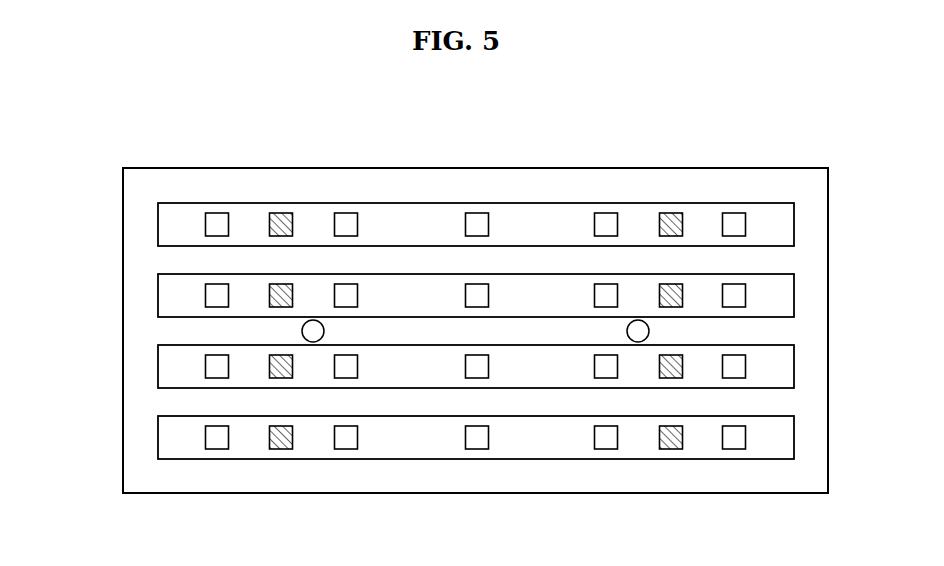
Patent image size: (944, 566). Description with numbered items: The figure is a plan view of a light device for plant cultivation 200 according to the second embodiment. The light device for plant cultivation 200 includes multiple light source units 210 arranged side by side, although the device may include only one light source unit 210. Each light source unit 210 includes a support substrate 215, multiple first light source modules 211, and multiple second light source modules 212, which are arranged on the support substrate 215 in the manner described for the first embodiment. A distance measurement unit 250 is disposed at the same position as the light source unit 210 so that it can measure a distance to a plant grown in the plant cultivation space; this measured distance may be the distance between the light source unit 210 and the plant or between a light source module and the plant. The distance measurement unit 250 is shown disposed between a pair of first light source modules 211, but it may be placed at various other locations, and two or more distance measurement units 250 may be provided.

The light device for plant cultivation 200 is at (110, 112).
The light source unit 210 is at (476, 170).
The first light source module 211 is at (729, 214).
The second light source module 212 is at (676, 185).
The support substrate 215 is at (777, 220).
The distance measurement unit 250 is at (637, 342).